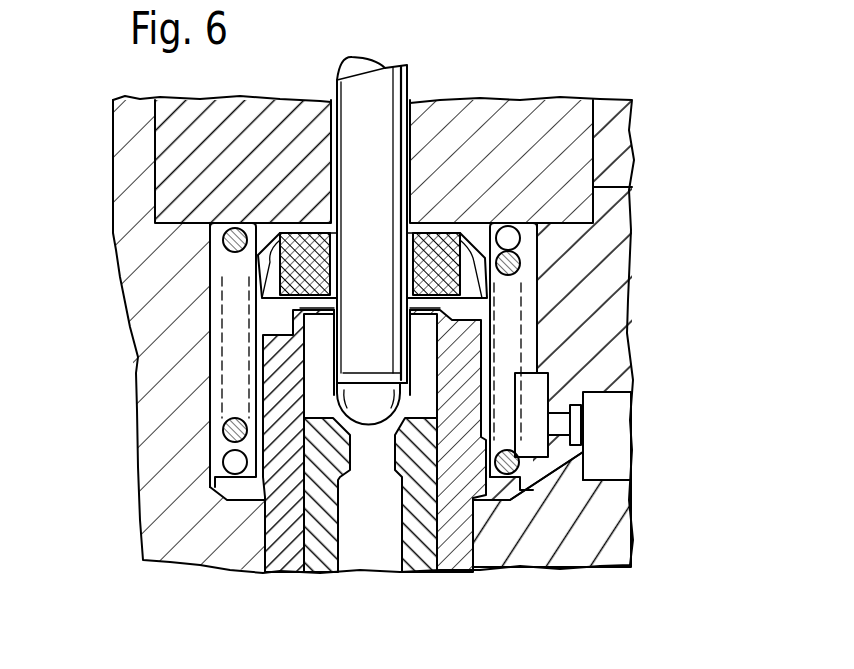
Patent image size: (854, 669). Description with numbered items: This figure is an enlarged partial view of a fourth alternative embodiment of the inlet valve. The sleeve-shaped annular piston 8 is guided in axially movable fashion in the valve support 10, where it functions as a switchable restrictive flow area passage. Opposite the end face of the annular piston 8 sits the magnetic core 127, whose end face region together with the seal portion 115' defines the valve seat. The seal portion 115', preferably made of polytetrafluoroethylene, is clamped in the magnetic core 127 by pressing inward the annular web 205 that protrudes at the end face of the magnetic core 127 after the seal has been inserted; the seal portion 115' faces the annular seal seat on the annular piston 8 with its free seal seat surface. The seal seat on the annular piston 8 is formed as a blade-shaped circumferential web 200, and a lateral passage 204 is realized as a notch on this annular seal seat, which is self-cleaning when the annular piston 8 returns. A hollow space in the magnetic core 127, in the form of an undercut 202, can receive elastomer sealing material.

The annular piston 8 is at (477, 532).
The valve support 10 is at (620, 373).
The magnetic core 127 is at (573, 130).
The seal portion 115' is at (488, 235).
The circumferential web 200 is at (440, 317).
The undercut 202 is at (253, 257).
The lateral passage 204 is at (297, 317).
The annular web 205 is at (522, 285).